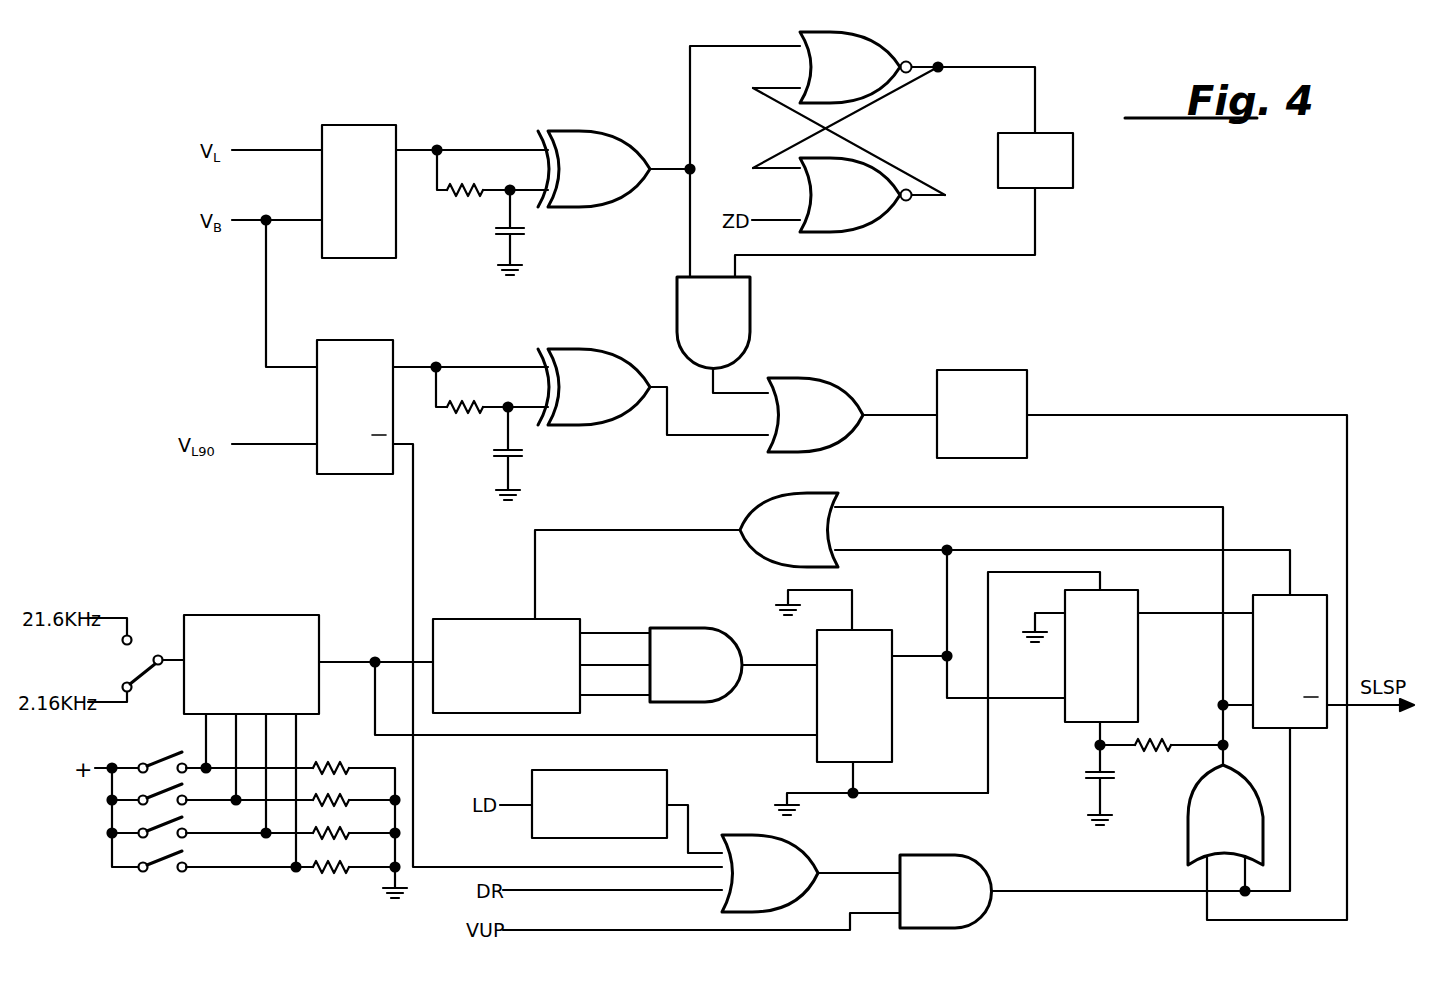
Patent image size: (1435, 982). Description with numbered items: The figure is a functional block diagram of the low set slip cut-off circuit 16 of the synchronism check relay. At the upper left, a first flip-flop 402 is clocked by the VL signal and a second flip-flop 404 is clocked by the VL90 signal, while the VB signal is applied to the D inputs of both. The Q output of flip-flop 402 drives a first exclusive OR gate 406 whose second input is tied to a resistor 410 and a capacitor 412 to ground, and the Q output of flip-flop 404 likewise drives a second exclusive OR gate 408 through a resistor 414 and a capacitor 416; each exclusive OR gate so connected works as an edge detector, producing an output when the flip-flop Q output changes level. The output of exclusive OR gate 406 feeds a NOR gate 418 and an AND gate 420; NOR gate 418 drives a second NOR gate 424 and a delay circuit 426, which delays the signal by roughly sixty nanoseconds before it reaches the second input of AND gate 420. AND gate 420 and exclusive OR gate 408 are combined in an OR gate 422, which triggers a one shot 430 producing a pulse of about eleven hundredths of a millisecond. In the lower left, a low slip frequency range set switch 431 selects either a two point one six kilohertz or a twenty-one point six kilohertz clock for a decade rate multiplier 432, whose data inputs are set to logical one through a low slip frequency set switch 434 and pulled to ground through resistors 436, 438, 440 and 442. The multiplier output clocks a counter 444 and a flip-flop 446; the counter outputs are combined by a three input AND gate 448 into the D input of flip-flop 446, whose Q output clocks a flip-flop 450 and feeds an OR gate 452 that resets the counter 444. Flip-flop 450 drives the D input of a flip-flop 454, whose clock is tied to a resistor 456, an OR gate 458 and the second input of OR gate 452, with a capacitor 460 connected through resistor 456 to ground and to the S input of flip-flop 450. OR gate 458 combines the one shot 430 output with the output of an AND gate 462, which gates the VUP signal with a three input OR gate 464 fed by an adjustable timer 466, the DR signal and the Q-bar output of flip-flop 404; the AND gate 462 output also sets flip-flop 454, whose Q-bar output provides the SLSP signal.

The low set slip cut-off circuit 16 is at (1070, 282).
The first flip-flop 402 is at (362, 132).
The second flip-flop 404 is at (350, 352).
The first exclusive OR gate 406 is at (577, 148).
The second exclusive OR gate 408 is at (575, 370).
The resistor 410 is at (466, 198).
The capacitor 412 is at (522, 236).
The resistor 414 is at (466, 414).
The capacitor 416 is at (525, 454).
The two input NOR gate 418 is at (870, 60).
The two input AND gate 420 is at (740, 313).
The two input OR gate 422 is at (820, 402).
The second two input NOR gate 424 is at (875, 207).
The delay circuit 426 is at (1053, 138).
The one shot 430 is at (1017, 393).
The low slip frequency range set switch 431 is at (137, 663).
The decade rate multiplier 432 is at (262, 625).
The low slip frequency set switch 434 is at (100, 833).
The resistor 436 is at (334, 763).
The resistor 438 is at (352, 788).
The resistor 440 is at (352, 821).
The resistor 442 is at (352, 855).
The counter 444 is at (462, 623).
The flip-flop 446 is at (895, 723).
The three input AND gate 448 is at (683, 642).
The flip-flop 450 is at (1128, 683).
The two input OR gate 452 is at (778, 518).
The flip-flop 454 is at (1313, 600).
The resistor 456 is at (1154, 753).
The two input OR gate 458 is at (1195, 842).
The capacitor 460 is at (1085, 773).
The two input AND gate 462 is at (973, 873).
The three input OR gate 464 is at (780, 865).
The adjustable timer 466 is at (660, 788).